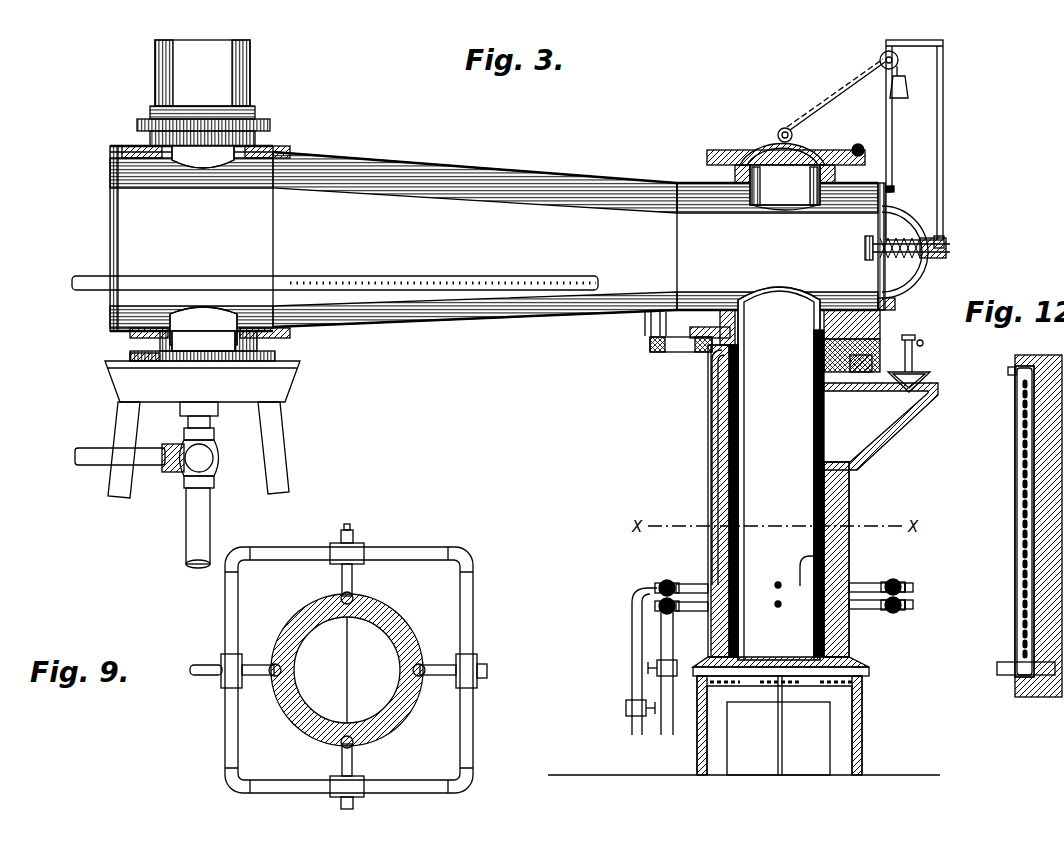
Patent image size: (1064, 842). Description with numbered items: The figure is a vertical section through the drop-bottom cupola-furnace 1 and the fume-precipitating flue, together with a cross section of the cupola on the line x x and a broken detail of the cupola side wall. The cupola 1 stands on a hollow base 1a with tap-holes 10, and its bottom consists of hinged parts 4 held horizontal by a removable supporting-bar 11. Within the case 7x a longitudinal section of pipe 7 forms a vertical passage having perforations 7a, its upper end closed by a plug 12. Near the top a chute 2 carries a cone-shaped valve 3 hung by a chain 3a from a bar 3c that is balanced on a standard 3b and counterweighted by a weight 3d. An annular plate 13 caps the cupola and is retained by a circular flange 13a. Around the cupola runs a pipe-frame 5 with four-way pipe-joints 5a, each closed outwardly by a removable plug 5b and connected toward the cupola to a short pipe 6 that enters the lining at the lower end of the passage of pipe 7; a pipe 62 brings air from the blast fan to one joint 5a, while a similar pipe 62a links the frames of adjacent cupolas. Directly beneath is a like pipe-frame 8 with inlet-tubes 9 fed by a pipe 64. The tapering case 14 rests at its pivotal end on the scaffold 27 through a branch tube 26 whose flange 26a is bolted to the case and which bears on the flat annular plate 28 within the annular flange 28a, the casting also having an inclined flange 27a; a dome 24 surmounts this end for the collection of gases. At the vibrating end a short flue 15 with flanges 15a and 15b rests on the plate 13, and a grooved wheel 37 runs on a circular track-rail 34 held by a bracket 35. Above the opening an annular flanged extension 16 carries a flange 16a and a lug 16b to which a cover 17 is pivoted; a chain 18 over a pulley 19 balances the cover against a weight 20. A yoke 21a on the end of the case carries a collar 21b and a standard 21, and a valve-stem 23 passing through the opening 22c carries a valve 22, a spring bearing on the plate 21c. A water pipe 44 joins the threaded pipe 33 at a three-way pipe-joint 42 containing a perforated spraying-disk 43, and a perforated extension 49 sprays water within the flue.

In FIG. 3, the drop-bottom cupola-furnace 1 is at (778, 493).
In FIG. 9, the drop-bottom cupola-furnace 1 is at (290, 614).
In FIG. 12, the drop-bottom cupola-furnace 1 is at (1038, 526).
In FIG. 3, the hollow base 1a is at (858, 720).
In FIG. 3, the chute 2 is at (881, 426).
In FIG. 3, the cone-shaped valve 3 is at (909, 382).
In FIG. 3, the chain 3a is at (894, 356).
In FIG. 3, the standard 3b is at (932, 363).
In FIG. 3, the bar 3c is at (918, 329).
In FIG. 3, the weight 3d is at (934, 345).
In FIG. 3, the hinged bottom parts 4 is at (781, 691).
In FIG. 9, the hinged bottom parts 4 is at (345, 670).
In FIG. 3, the pipe-frame 5 is at (773, 643).
In FIG. 9, the pipe-frame 5 is at (350, 661).
In FIG. 9, the four-way pipe-joint 5a is at (480, 660).
In FIG. 3, the removable plug 5b is at (924, 588).
In FIG. 9, the removable plug 5b is at (348, 653).
In FIG. 3, the short section of pipe 6 is at (790, 565).
In FIG. 9, the short section of pipe 6 is at (349, 670).
In FIG. 12, the short section of pipe 6 is at (985, 668).
In FIG. 3, the pipe section 7 is at (710, 508).
In FIG. 9, the pipe section 7 is at (346, 663).
In FIG. 12, the pipe section 7 is at (1020, 478).
In FIG. 3, the perforations 7a is at (852, 550).
In FIG. 3, the case 7x is at (852, 497).
In FIG. 3, the pipe-frame 8 is at (780, 608).
In FIG. 3, the inlet-tubes 9 is at (790, 619).
In FIG. 3, the tap-holes 10 is at (783, 661).
In FIG. 3, the removable supporting-bar 11 is at (783, 736).
In FIG. 3, the plug 12 is at (706, 362).
In FIG. 12, the plug 12 is at (1008, 372).
In FIG. 3, the annular plate 13 is at (858, 349).
In FIG. 3, the circular flange 13a is at (871, 356).
In FIG. 3, the case 14 is at (497, 242).
In FIG. 3, the short flue 15 is at (779, 473).
In FIG. 3, the flange 15a is at (712, 327).
In FIG. 3, the flange 15b is at (852, 324).
In FIG. 3, the annular flanged extension 16 is at (785, 187).
In FIG. 3, the flange 16a is at (782, 157).
In FIG. 3, the lug 16b is at (860, 144).
In FIG. 3, the cover 17 is at (810, 148).
In FIG. 3, the chain 18 is at (848, 84).
In FIG. 3, the pulley 19 is at (900, 61).
In FIG. 3, the weight 20 is at (901, 99).
In FIG. 3, the standard 21 is at (944, 155).
In FIG. 3, the yoke 21a is at (912, 282).
In FIG. 3, the collar 21b is at (954, 233).
In FIG. 3, the plate 21c is at (922, 262).
In FIG. 3, the valve 22 is at (865, 248).
In FIG. 3, the opening 22c is at (850, 270).
In FIG. 3, the valve-stem 23 is at (947, 248).
In FIG. 3, the dome 24 is at (905, 232).
In FIG. 3, the branch tube 26 is at (203, 326).
In FIG. 3, the flange 26a is at (262, 342).
In FIG. 3, the scaffold 27 is at (283, 456).
In FIG. 3, the circular flange 27a is at (202, 381).
In FIG. 3, the flat annular plate 28 is at (277, 358).
In FIG. 3, the annular flange 28a is at (130, 355).
In FIG. 3, the externally-threaded pipe 33 is at (186, 531).
In FIG. 3, the circular track-rail 34 is at (652, 353).
In FIG. 3, the bracket 35 is at (682, 353).
In FIG. 3, the grooved wheel 37 is at (646, 338).
In FIG. 3, the three-way pipe-joint 42 is at (224, 458).
In FIG. 3, the perforated spraying-disk 43 is at (187, 458).
In FIG. 3, the pipe 44 is at (108, 450).
In FIG. 3, the perforated extension 49 is at (452, 278).
In FIG. 3, the pipe 62 is at (630, 690).
In FIG. 9, the pipe 62 is at (196, 676).
In FIG. 3, the section of pipe 62a is at (640, 708).
In FIG. 3, the pipe 64 is at (667, 735).